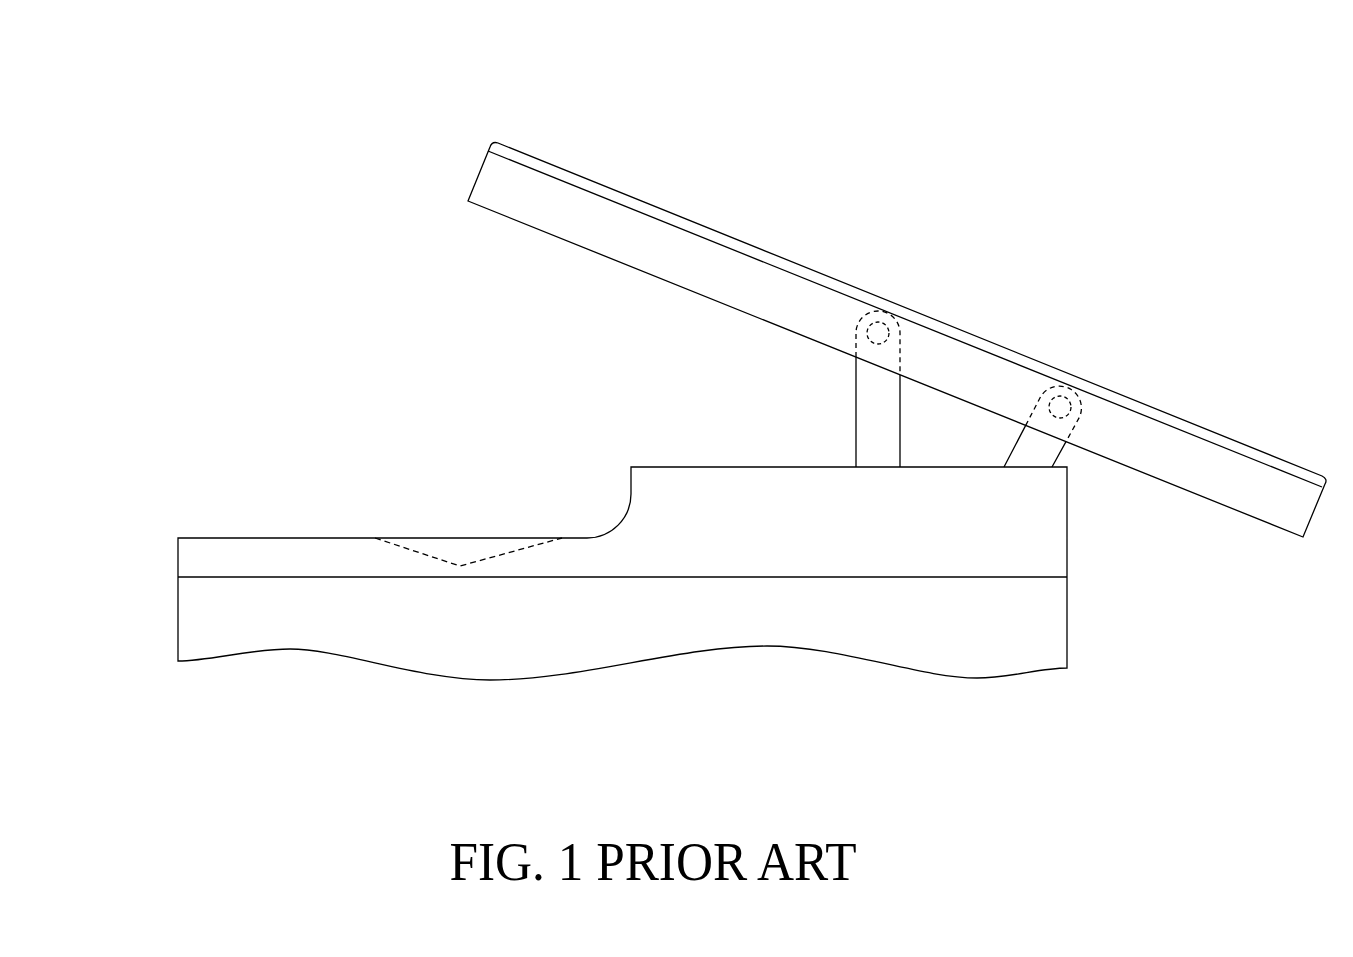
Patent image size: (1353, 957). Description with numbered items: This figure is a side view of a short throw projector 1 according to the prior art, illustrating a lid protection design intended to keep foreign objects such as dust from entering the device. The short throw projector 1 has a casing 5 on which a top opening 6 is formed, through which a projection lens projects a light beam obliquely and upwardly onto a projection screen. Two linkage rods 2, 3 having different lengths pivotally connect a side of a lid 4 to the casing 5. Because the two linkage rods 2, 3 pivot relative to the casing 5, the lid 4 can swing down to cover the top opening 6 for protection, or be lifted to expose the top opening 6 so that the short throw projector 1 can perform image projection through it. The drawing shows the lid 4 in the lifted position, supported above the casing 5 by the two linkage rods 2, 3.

The short throw projector 1 is at (235, 88).
The linkage rod 2 is at (880, 418).
The linkage rod 3 is at (1028, 440).
The lid 4 is at (522, 205).
The casing 5 is at (1068, 543).
The top opening 6 is at (418, 552).